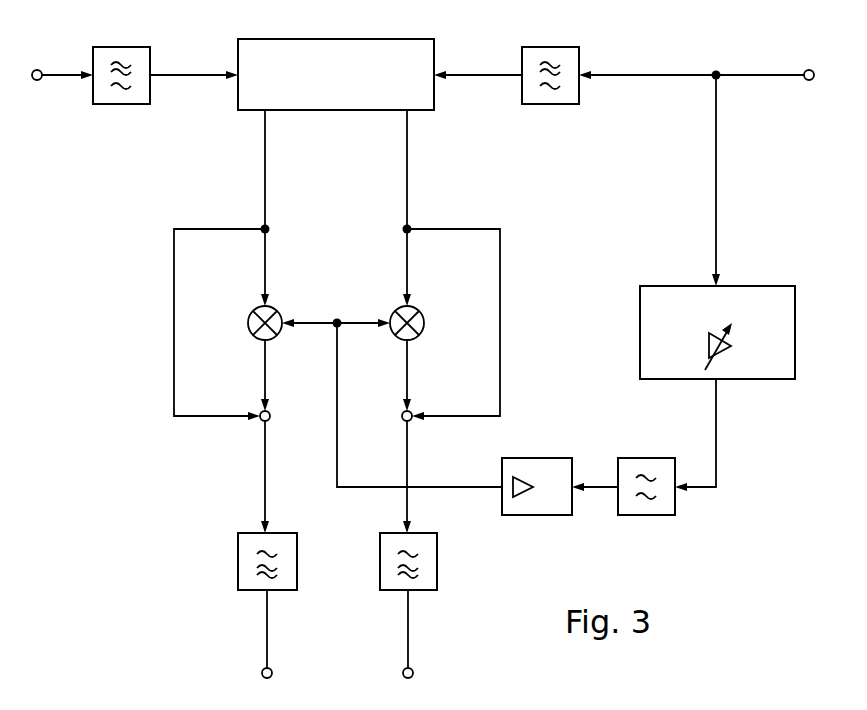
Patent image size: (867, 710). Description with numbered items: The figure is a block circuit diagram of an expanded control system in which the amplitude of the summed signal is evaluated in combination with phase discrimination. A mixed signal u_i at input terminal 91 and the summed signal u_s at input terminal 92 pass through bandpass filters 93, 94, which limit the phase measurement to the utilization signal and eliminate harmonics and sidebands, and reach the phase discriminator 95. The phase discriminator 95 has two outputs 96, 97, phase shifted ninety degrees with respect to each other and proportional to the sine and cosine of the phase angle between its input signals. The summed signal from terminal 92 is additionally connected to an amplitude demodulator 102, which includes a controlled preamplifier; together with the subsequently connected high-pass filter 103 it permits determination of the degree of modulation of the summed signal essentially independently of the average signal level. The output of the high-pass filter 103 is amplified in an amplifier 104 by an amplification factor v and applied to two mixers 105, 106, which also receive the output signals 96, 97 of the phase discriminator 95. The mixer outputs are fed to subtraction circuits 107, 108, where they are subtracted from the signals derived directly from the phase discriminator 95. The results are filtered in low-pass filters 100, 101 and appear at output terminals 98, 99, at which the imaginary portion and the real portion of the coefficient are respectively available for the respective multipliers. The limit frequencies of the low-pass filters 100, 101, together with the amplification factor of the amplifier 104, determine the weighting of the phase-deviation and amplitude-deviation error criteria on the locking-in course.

The input terminal for signal u_i 91 is at (60, 76).
The input terminal for signal u_s 92 is at (700, 76).
The bandpass filter 93 is at (165, 63).
The bandpass filter 94 is at (507, 63).
The phase discriminator 95 is at (336, 61).
The output of phase discriminator 96 is at (248, 208).
The output of phase discriminator 97 is at (422, 208).
The output terminal 98 is at (266, 638).
The output terminal 99 is at (408, 638).
The low-pass filter 100 is at (278, 505).
The low-pass filter 101 is at (419, 505).
The amplitude demodulator 102 is at (720, 227).
The high-pass filter 103 is at (667, 447).
The amplifier 104 is at (450, 417).
The mixer 105 is at (282, 347).
The mixer 106 is at (424, 347).
The subtraction circuit 107 is at (232, 341).
The subtraction circuit 108 is at (441, 341).